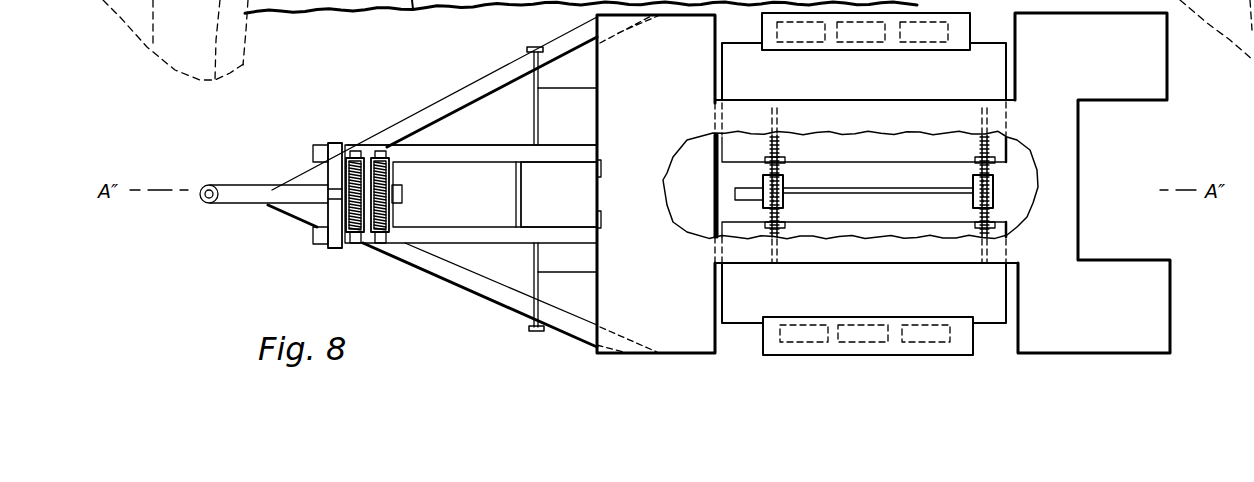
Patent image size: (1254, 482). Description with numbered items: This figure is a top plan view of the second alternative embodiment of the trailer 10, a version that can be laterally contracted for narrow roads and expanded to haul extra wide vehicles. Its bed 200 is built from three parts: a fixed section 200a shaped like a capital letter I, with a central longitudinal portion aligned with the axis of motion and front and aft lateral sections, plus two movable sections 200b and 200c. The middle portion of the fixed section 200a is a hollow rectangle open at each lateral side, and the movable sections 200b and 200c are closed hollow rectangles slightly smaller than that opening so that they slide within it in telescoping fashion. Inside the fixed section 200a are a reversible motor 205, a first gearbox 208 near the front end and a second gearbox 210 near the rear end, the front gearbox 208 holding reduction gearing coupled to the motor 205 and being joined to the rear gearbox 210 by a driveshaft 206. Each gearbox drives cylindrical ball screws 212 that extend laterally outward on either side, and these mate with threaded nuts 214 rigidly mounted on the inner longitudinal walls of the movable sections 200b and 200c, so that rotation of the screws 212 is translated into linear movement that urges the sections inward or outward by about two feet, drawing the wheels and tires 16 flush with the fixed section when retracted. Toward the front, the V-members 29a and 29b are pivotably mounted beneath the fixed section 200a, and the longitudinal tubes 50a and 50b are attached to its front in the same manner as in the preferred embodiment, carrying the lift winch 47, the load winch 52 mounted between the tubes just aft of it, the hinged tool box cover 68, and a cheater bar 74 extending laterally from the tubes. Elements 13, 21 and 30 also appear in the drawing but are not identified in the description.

The trailer 10 is at (562, 349).
The vehicle frame member 13 is at (1138, 203).
The wheels and tires 16 is at (922, 343).
The mounting rail 21 is at (867, 205).
The V-member 29a is at (423, 262).
The V-member 29b is at (452, 109).
The tongue 30 is at (262, 207).
The lift winch 47 is at (353, 147).
The longitudinal tube 50a is at (473, 226).
The longitudinal tube 50b is at (470, 146).
The load winch 52 is at (400, 216).
The hinged cover 68 is at (575, 206).
The cheater bar 74 is at (525, 312).
The bed 200 is at (747, 344).
The fixed section 200a is at (678, 90).
The movable section 200b is at (894, 306).
The movable section 200c is at (894, 90).
The motor 205 is at (735, 195).
The driveshaft 206 is at (892, 194).
The first gearbox 208 is at (784, 184).
The second gearbox 210 is at (973, 178).
The ball screw 212 is at (768, 168).
The threaded nut 214 is at (787, 160).